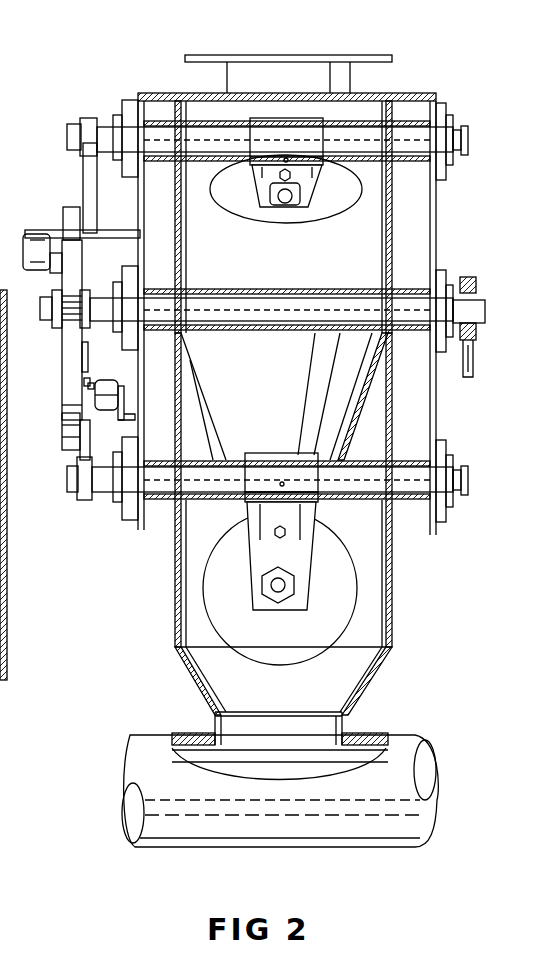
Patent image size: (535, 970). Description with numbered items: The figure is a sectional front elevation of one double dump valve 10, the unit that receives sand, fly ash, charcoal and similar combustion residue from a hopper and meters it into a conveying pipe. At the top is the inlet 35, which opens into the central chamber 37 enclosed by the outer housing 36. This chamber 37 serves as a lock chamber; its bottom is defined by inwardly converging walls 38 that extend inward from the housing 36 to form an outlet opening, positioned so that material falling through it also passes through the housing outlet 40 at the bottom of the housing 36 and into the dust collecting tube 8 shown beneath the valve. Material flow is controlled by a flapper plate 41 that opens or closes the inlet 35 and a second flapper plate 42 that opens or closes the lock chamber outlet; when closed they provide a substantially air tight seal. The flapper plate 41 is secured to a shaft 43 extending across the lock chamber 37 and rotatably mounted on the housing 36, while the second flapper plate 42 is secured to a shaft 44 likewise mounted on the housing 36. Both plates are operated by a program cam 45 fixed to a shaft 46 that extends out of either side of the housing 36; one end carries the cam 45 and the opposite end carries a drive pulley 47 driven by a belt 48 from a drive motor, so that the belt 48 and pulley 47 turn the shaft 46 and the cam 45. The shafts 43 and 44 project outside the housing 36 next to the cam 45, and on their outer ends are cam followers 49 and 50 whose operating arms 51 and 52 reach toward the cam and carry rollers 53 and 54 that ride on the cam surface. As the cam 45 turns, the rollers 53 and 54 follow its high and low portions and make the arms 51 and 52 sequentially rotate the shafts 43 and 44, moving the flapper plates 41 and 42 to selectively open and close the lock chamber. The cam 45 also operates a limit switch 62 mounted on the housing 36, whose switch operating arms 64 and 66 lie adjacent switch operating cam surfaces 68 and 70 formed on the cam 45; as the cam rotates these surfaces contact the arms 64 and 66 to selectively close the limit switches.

The dust collecting tube 8 is at (312, 822).
The double dump valve 10 is at (125, 603).
The inlet 35 is at (283, 68).
The outer housing 36 is at (5, 527).
The central chamber 37 is at (348, 248).
The inwardly converging walls 38 is at (360, 415).
The housing outlet 40 is at (322, 728).
The flapper plate 41 is at (258, 212).
The second flapper plate 42 is at (255, 643).
The shaft 43 is at (377, 145).
The shaft 44 is at (365, 480).
The program cam 45 is at (72, 352).
The shaft 46 is at (270, 322).
The drive pulley 47 is at (476, 282).
The belt 48 is at (468, 378).
The cam follower 49 is at (87, 120).
The cam follower 50 is at (82, 490).
The operating arm 51 is at (91, 186).
The operating arm 52 is at (90, 435).
The roller 53 is at (70, 207).
The roller 54 is at (65, 442).
The limit switch 62 is at (112, 393).
The switch operating arm 64 is at (55, 265).
The switch operating arm 66 is at (95, 383).
The switch operating cam surface 68 is at (35, 238).
The switch operating cam surface 70 is at (88, 352).